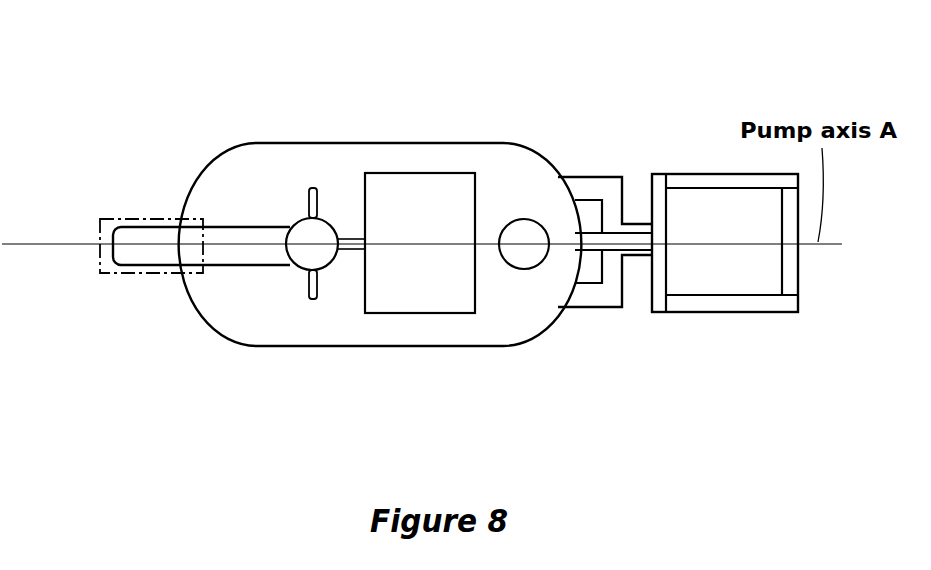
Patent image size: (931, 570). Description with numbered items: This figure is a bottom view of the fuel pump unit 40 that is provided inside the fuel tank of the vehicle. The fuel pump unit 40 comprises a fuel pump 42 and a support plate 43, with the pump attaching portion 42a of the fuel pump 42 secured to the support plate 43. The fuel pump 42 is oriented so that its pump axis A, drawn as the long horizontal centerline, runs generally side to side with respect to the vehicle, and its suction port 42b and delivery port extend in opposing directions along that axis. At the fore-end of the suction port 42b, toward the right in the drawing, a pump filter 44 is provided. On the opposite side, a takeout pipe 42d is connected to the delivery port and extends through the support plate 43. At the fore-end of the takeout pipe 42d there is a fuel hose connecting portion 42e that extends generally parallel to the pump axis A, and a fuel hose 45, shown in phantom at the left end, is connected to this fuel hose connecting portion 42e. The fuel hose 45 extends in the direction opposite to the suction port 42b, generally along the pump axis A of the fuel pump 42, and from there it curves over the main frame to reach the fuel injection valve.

The fuel pump unit 40 is at (188, 48).
The fuel pump 42 is at (602, 188).
The pump attaching portion 42a is at (524, 248).
The suction port 42b is at (635, 257).
The takeout pipe 42d is at (302, 253).
The fuel hose connecting portion 42e is at (230, 252).
The support plate 43 is at (372, 152).
The pump filter 44 is at (737, 288).
The fuel hose 45 is at (110, 270).